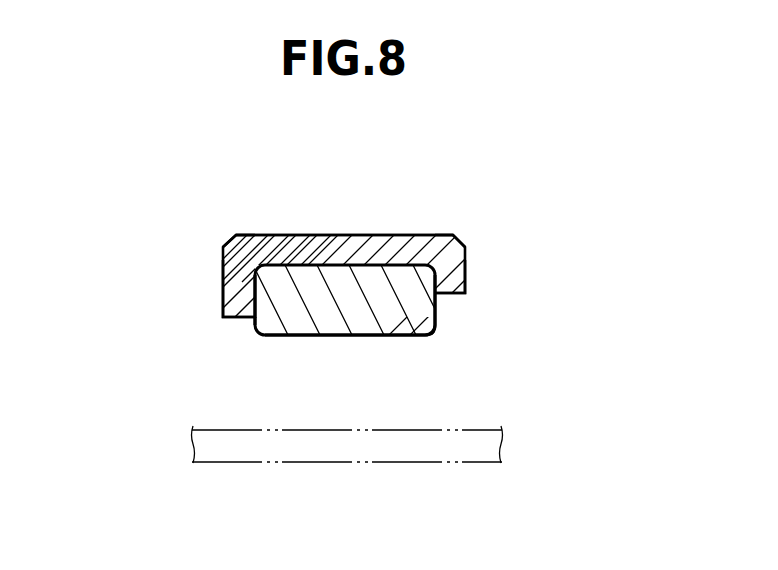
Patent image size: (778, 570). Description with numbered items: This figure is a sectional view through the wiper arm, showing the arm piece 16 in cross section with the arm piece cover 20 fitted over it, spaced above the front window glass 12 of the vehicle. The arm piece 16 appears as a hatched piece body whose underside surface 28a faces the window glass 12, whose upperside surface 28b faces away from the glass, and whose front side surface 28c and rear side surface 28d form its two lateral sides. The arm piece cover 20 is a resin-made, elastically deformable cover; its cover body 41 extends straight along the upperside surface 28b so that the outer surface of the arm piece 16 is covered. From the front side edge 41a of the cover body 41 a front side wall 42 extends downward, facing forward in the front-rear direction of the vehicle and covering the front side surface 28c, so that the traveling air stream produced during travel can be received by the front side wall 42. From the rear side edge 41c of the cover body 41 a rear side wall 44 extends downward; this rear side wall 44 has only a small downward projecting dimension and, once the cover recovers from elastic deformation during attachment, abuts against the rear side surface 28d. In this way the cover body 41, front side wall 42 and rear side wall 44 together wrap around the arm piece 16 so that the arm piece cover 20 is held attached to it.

The front window glass 12 is at (300, 430).
The arm piece 16 is at (437, 333).
The arm piece cover 20 is at (210, 223).
The underside surface 28a is at (355, 335).
The upperside surface 28b is at (315, 263).
The front side surface 28c is at (254, 300).
The rear side surface 28d is at (435, 305).
The cover body 41 is at (360, 243).
The front side edge 41a is at (235, 237).
The rear side edge 41c is at (453, 235).
The front side wall 42 is at (228, 282).
The rear side wall 44 is at (460, 270).